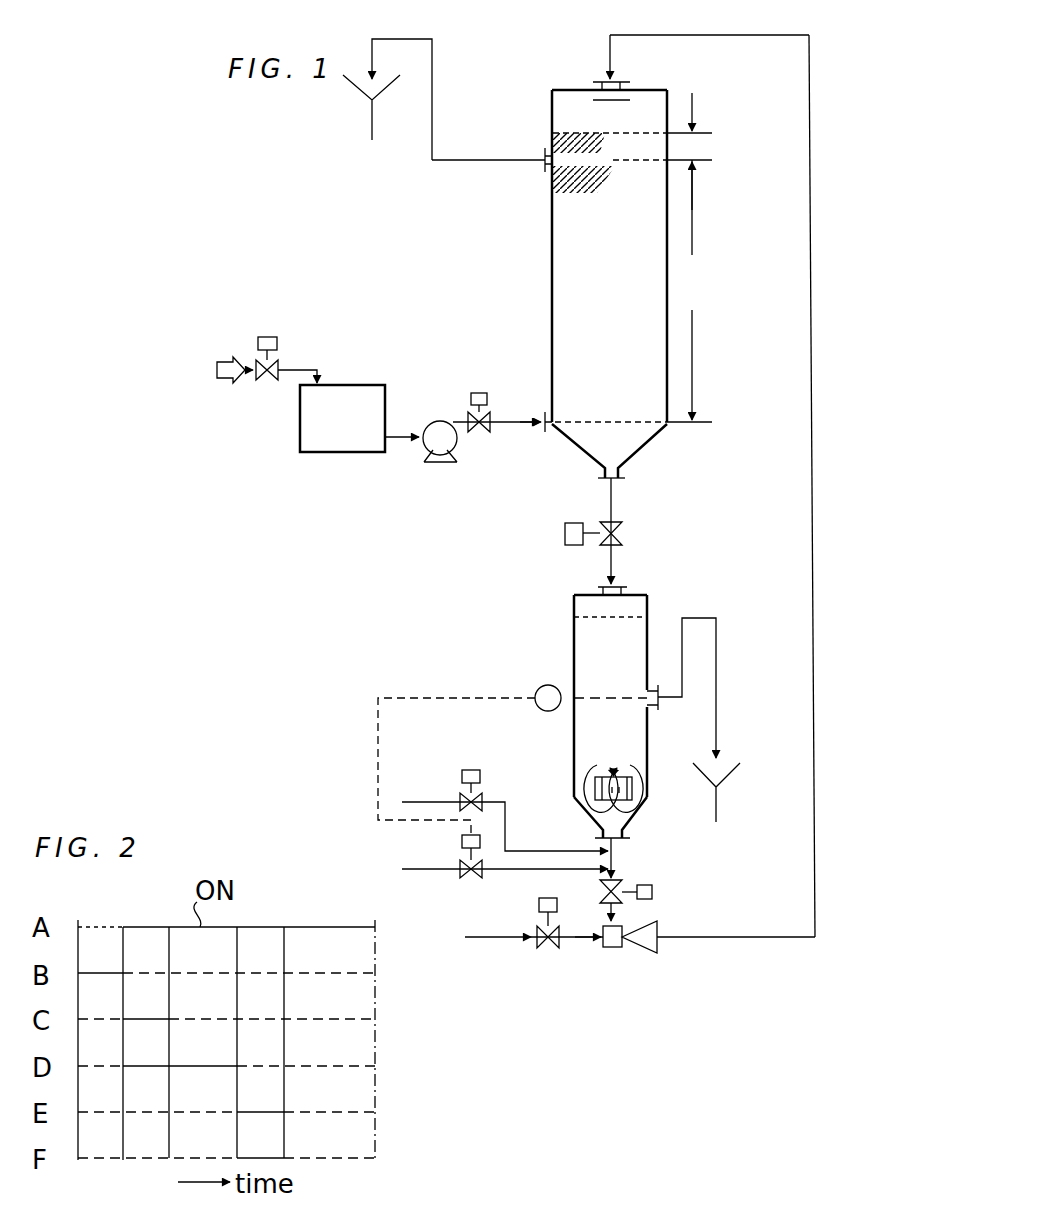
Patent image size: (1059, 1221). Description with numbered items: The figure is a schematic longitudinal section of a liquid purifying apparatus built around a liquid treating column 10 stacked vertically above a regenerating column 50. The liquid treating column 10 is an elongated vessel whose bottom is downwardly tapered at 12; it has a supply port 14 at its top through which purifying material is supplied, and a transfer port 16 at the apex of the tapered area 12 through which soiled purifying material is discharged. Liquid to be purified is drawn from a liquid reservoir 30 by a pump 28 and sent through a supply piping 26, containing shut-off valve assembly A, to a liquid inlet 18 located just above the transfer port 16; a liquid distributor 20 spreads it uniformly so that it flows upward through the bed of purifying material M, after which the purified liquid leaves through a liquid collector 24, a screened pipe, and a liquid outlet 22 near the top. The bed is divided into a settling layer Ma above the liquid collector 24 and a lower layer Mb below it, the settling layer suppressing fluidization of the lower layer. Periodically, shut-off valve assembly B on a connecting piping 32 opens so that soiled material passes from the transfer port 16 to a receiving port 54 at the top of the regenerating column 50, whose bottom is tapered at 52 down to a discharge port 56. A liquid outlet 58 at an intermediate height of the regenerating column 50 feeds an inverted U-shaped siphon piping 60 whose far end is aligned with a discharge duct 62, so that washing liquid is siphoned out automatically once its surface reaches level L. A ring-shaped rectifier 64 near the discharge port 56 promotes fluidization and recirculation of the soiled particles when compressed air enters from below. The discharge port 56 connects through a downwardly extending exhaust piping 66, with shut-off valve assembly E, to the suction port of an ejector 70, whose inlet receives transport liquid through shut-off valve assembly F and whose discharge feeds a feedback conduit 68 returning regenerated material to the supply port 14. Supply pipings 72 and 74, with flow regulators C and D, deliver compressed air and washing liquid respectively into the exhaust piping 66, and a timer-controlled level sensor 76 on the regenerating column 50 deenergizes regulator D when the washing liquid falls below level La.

The liquid treating column 10 is at (546, 312).
The downwardly tapered bottom 12 is at (648, 440).
The supply port 14 is at (598, 82).
The transfer port 16 is at (626, 472).
The liquid inlet 18 is at (545, 432).
The liquid distributor 20 is at (633, 422).
The liquid outlet 22 is at (548, 158).
The liquid collector 24 is at (633, 160).
The supply piping 26 is at (515, 420).
The pump 28 is at (430, 425).
The liquid reservoir 30 is at (340, 397).
The connecting piping 32 is at (611, 505).
The regenerating column 50 is at (568, 650).
The downwardly tapered bottom 52 is at (600, 812).
The receiving port 54 is at (620, 590).
The discharge port 56 is at (626, 830).
The liquid outlet 58 is at (656, 690).
The siphon piping 60 is at (716, 660).
The discharge duct 62 is at (722, 795).
The rectifier 64 is at (636, 790).
The exhaust piping 66 is at (614, 858).
The feedback conduit 68 is at (812, 710).
The ejector 70 is at (614, 950).
The supply piping 72 is at (402, 802).
The supply piping 74 is at (435, 870).
The level sensor 76 is at (545, 686).